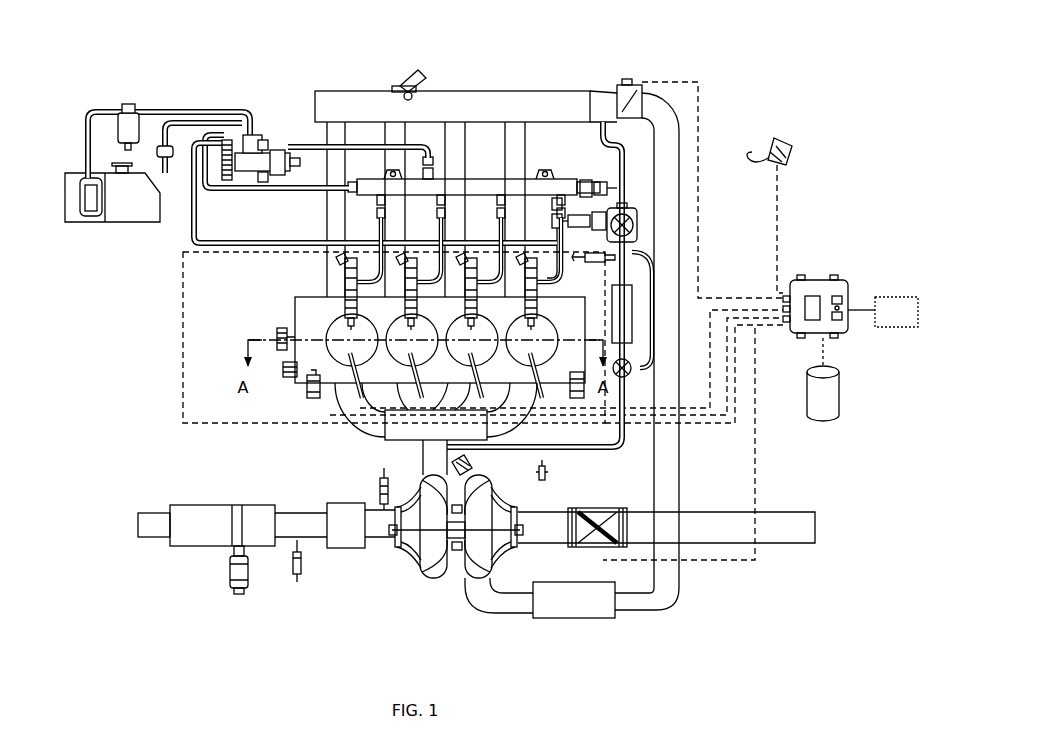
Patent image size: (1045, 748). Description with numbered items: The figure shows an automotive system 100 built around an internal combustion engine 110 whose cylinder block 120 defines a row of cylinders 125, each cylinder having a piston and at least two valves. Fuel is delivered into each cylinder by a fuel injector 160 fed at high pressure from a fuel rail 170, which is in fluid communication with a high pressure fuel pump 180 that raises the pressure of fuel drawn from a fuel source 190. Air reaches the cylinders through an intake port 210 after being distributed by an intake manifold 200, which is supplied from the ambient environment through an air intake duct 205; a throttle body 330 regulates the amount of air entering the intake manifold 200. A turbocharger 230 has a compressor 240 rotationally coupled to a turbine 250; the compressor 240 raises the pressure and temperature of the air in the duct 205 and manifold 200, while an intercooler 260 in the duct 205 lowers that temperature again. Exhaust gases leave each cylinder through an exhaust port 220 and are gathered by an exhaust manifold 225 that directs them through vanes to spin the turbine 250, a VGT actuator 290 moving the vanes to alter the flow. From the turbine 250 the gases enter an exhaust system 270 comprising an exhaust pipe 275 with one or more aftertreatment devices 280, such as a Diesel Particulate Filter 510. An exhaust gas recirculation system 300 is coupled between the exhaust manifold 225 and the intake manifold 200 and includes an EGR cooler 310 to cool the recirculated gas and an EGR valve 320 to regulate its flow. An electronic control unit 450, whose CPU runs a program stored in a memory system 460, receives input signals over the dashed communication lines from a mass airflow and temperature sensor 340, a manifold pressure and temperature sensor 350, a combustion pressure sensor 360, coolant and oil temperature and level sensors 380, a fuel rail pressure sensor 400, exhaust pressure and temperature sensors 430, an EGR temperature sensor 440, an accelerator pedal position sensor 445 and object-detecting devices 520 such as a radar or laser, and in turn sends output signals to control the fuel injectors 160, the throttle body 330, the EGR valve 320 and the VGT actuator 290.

The automotive system 100 is at (238, 74).
The internal combustion engine 110 is at (542, 80).
The cylinder block 120 is at (298, 299).
The cylinder 125 is at (565, 308).
The fuel injector 160 is at (352, 281).
The fuel rail 170 is at (352, 189).
The high pressure fuel pump 180 is at (268, 135).
The fuel source 190 is at (132, 206).
The intake manifold 200 is at (460, 98).
The air intake duct 205 is at (703, 497).
The intake port 210 is at (333, 299).
The exhaust port 220 is at (358, 396).
The exhaust manifold 225 is at (360, 489).
The turbocharger 230 is at (428, 586).
The compressor 240 is at (483, 553).
The turbine 250 is at (430, 547).
The intercooler 260 is at (598, 608).
The exhaust system 270 is at (203, 492).
The exhaust pipe 275 is at (150, 525).
The exhaust aftertreatment devices 280 is at (193, 527).
The VGT actuator 290 is at (470, 465).
The exhaust gas recirculation system 300 is at (595, 455).
The EGR cooler 310 is at (622, 328).
The EGR valve 320 is at (628, 210).
The throttle body 330 is at (631, 81).
The mass airflow and temperature sensor 340 is at (598, 548).
The manifold pressure and temperature sensor 350 is at (403, 80).
The combustion pressure sensor 360 is at (408, 433).
The coolant and oil temperature and level sensors 380 is at (312, 393).
The fuel rail pressure sensor 400 is at (606, 181).
The exhaust pressure and temperature sensors 430 is at (296, 580).
The EGR temperature sensor 440 is at (606, 240).
The accelerator pedal position sensor 445 is at (777, 140).
The electronic control unit 450 is at (820, 275).
The memory system 460 is at (824, 410).
The Diesel Particulate Filter 510 is at (340, 545).
The object-detecting devices 520 is at (910, 297).